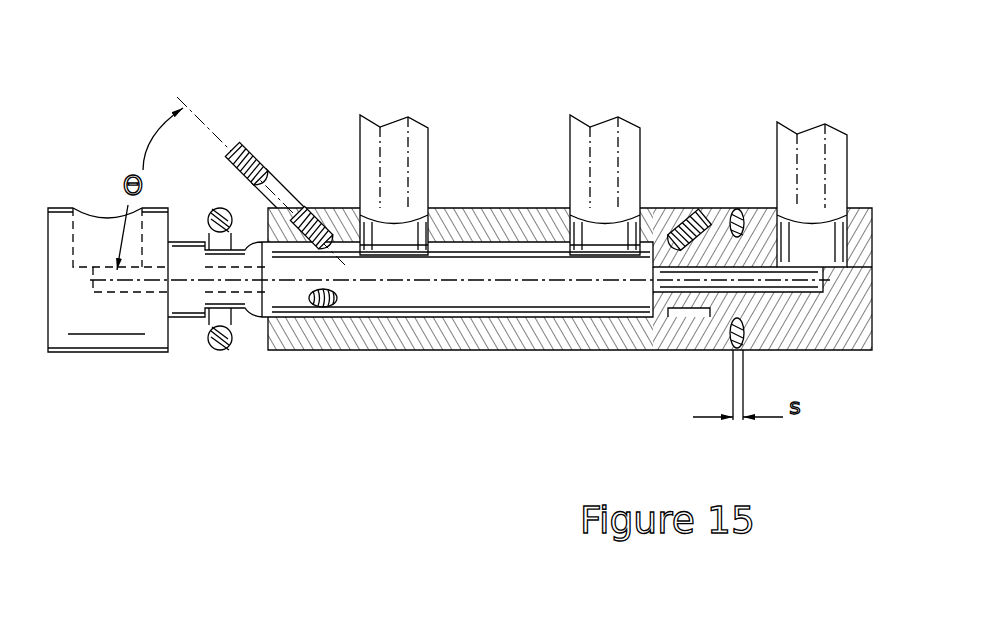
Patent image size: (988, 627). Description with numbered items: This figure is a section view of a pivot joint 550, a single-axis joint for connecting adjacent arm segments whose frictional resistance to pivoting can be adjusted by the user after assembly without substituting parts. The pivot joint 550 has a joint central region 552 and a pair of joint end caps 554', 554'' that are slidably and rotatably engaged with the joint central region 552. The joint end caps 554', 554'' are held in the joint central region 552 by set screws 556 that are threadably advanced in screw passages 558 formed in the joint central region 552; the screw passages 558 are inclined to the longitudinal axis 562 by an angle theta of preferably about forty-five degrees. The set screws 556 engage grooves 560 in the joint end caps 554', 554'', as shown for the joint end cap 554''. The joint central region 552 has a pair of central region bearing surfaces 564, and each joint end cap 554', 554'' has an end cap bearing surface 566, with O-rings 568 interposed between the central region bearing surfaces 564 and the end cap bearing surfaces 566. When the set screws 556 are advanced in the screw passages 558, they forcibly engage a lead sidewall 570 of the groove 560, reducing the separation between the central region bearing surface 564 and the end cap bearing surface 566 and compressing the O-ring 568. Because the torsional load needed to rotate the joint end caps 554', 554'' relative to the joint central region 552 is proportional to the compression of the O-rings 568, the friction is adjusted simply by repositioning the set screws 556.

The pivot joint 550 is at (690, 97).
The joint central region 552 is at (504, 205).
The joint end cap 554' is at (158, 340).
The joint end cap 554'' is at (858, 339).
The set screws 556 is at (258, 167).
The screw passages 558 is at (330, 243).
The grooves 560 is at (218, 348).
The longitudinal axis 562 is at (531, 288).
The central region bearing surfaces 564 is at (252, 340).
The end cap bearing surface 566 is at (170, 343).
The O-rings 568 is at (217, 212).
The lead sidewall 570 is at (245, 345).